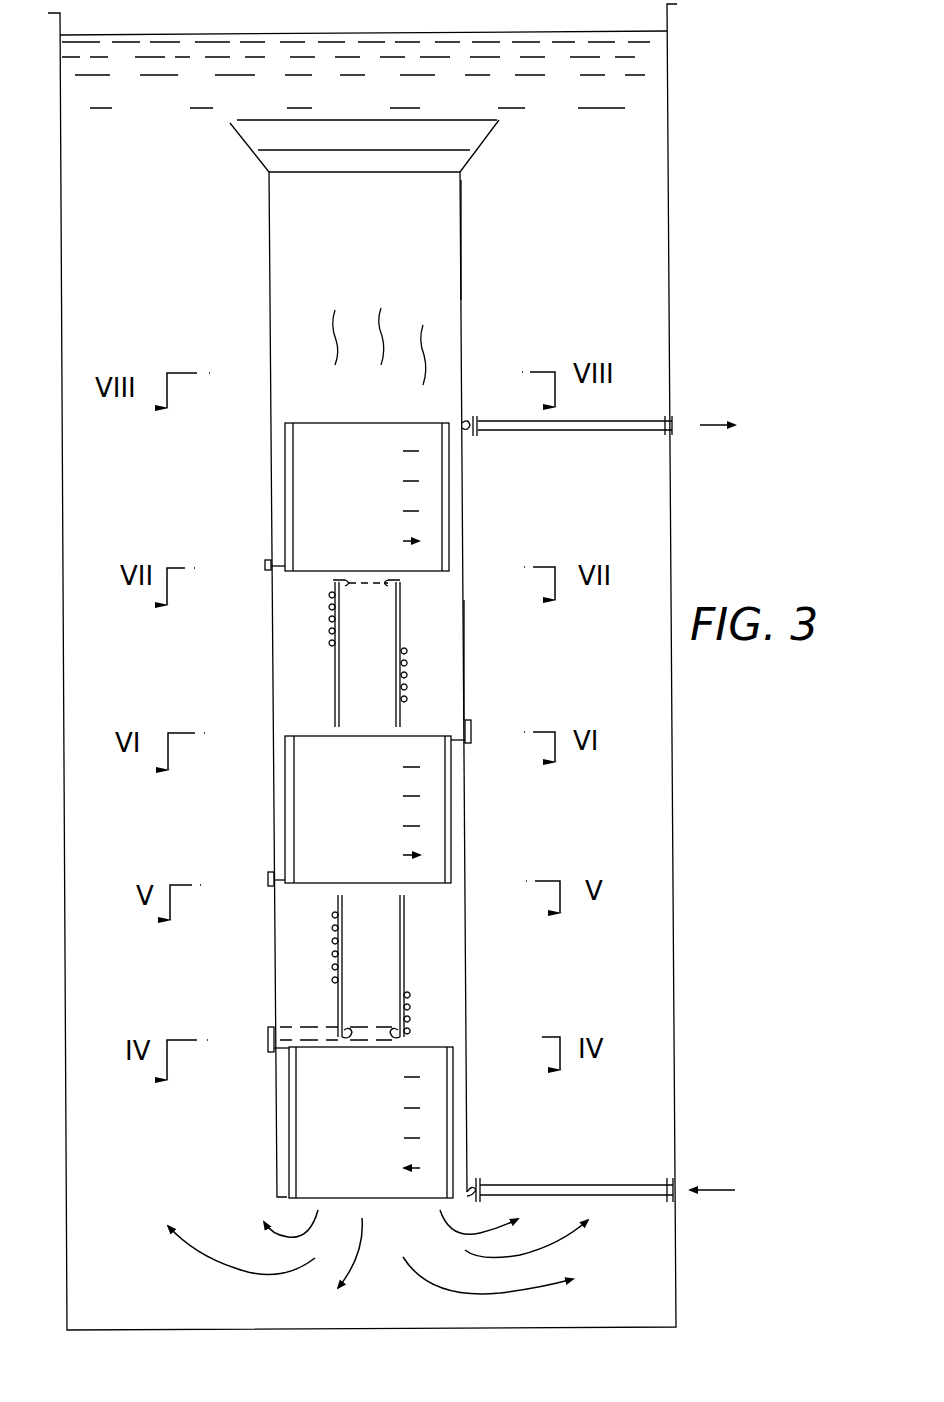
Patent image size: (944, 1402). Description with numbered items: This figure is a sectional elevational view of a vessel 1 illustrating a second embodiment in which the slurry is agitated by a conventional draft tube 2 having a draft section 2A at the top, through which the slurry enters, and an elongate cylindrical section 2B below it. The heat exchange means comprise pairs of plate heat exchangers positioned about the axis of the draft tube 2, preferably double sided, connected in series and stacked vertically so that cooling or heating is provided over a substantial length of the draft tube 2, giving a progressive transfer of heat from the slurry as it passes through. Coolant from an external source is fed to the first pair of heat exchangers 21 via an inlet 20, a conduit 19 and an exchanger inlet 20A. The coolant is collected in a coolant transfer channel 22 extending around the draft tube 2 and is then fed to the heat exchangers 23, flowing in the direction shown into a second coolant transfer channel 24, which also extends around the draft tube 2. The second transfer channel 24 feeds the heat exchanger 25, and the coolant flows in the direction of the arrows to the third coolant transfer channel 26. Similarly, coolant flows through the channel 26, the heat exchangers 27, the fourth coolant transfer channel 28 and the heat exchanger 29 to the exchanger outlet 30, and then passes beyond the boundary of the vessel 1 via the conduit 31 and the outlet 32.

The vessel 1 is at (671, 780).
The draft tube 2 is at (264, 639).
The draft section 2A is at (461, 240).
The elongate cylindrical section 2B is at (465, 660).
The conduit 19 is at (563, 1185).
The inlet 20 is at (678, 1180).
The exchanger inlet 20A is at (478, 1183).
The first pair of heat exchangers 21 is at (447, 1090).
The coolant transfer channel 22 is at (270, 1028).
The heat exchangers 23 is at (366, 945).
The second coolant transfer channel 24 is at (269, 872).
The heat exchanger 25 is at (443, 773).
The third coolant transfer channel 26 is at (470, 720).
The heat exchangers 27 is at (400, 675).
The fourth coolant transfer channel 28 is at (266, 560).
The heat exchanger 29 is at (438, 457).
The exchanger outlet 30 is at (465, 420).
The conduit 31 is at (596, 432).
The outlet 32 is at (672, 420).